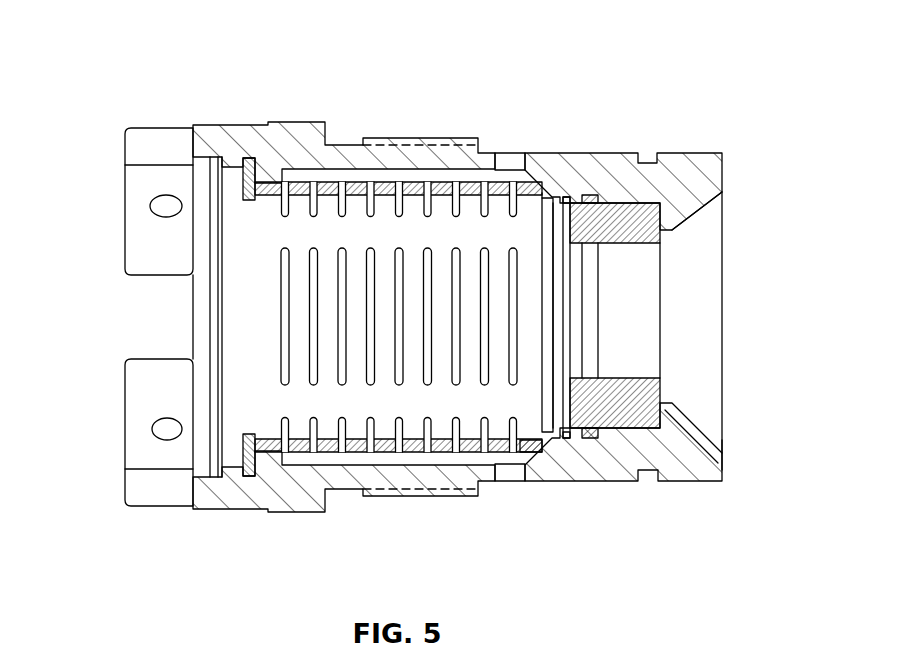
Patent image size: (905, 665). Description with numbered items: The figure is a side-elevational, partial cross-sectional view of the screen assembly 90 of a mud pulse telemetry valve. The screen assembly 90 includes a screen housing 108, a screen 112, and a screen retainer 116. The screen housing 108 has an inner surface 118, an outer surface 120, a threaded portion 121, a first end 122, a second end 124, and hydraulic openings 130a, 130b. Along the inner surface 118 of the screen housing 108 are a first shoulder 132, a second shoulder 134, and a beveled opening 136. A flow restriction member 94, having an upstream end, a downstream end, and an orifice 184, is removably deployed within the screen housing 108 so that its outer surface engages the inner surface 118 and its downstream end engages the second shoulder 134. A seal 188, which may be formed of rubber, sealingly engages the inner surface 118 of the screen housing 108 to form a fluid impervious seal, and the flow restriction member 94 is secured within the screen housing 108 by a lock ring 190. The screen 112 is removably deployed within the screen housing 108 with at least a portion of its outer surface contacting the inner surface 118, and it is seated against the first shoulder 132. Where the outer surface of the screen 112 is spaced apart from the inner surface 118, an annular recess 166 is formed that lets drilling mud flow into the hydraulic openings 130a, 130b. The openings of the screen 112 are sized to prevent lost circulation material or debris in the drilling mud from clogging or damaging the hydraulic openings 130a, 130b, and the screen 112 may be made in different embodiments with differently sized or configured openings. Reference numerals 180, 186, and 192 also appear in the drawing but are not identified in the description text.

The screen assembly 90 is at (428, 49).
The flow restriction member 94 is at (726, 202).
The screen housing 108 is at (344, 280).
The screen 112 is at (398, 414).
The screen retainer 116 is at (335, 280).
The inner surface 118 is at (309, 105).
The outer surface 120 is at (398, 133).
The threaded portion 121 is at (428, 97).
The first end 122 is at (113, 317).
The second end 124 is at (669, 306).
The hydraulic opening 130a is at (538, 104).
The hydraulic opening 130b is at (486, 527).
The first shoulder 132 is at (551, 494).
The second shoulder 134 is at (679, 389).
The beveled opening 136 is at (731, 431).
The annular recess 166 is at (404, 526).
The outer wall 180 is at (760, 460).
The orifice 184 is at (683, 310).
The seal ring 186 is at (623, 164).
The seal 188 is at (626, 489).
The lock ring 190 is at (605, 391).
The retention ring 192 is at (226, 507).